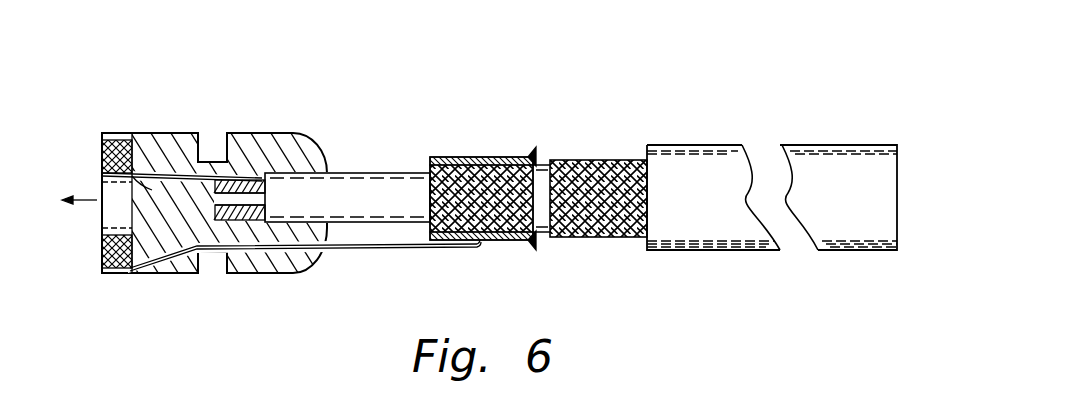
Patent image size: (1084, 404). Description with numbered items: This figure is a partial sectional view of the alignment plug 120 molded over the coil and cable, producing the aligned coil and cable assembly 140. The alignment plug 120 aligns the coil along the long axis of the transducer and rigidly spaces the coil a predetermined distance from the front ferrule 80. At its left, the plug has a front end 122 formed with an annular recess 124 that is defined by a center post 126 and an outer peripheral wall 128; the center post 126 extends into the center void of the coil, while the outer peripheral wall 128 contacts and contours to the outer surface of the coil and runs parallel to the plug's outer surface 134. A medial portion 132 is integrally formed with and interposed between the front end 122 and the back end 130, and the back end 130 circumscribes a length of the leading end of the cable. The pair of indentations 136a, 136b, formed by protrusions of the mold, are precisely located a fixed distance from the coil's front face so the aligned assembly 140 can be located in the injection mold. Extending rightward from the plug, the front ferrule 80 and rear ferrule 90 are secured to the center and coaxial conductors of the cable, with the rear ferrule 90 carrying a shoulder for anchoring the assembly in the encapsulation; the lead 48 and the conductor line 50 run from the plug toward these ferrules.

The inner conductor wire 48 is at (104, 182).
The outer conductor / braid 50 is at (418, 247).
The front ferrule 80 is at (236, 133).
The rear ferrule 90 is at (481, 157).
The alignment plug 120 is at (173, 95).
The front end 122 is at (94, 132).
The annular recess 124 is at (185, 275).
The center post 126 is at (132, 216).
The outer peripheral wall 128 is at (118, 275).
The back end 130 is at (325, 157).
The medial portion 132 is at (285, 142).
The outer surface 134 is at (163, 133).
The indentation 136a is at (215, 175).
The indentation 136b is at (207, 253).
The aligned coil and cable assembly 140 is at (622, 100).